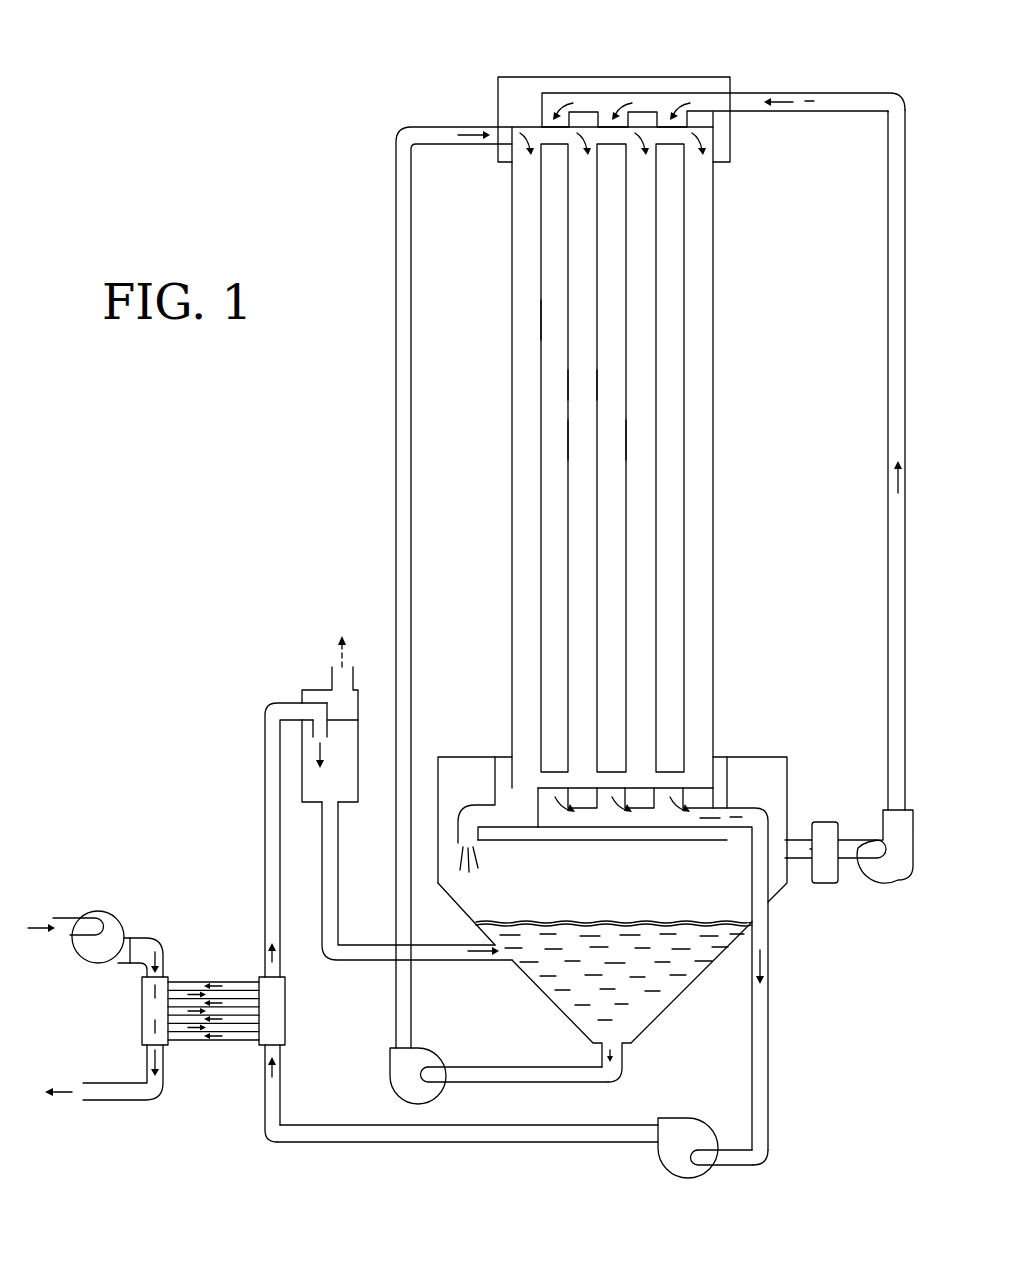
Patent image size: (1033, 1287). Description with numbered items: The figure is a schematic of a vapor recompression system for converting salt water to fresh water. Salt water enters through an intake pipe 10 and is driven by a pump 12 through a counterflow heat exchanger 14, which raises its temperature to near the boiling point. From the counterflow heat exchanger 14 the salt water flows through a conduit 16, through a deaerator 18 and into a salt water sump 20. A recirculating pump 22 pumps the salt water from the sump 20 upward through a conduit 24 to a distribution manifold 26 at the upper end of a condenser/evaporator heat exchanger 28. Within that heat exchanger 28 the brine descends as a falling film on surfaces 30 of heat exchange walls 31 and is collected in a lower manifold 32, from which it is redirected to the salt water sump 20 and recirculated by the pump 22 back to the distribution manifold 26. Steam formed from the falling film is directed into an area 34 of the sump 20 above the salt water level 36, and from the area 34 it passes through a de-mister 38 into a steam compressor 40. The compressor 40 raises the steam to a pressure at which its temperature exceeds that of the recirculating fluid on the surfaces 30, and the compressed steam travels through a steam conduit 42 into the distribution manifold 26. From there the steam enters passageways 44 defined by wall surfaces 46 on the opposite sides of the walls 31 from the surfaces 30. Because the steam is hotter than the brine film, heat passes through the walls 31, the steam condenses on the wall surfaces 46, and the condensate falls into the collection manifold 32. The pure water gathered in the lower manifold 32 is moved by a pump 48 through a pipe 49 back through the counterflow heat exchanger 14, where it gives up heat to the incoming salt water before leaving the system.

The intake pipe 10 is at (70, 930).
The pump 12 is at (117, 913).
The counterflow heat exchanger 14 is at (206, 972).
The conduit 16 is at (265, 823).
The deaerator 18 is at (350, 787).
The salt water sump 20 is at (558, 982).
The recirculating pump 22 is at (405, 1080).
The conduit 24 is at (403, 540).
The distribution manifold 26 is at (620, 72).
The condenser/evaporator heat exchanger 28 is at (741, 392).
The surfaces 30 is at (541, 229).
The walls 31 is at (567, 326).
The lower manifold 32 is at (642, 849).
The area 34 is at (572, 885).
The level of the salt water 36 is at (585, 920).
The de-mister 38 is at (827, 825).
The steam compressor 40 is at (885, 875).
The steam conduit 42 is at (888, 540).
The passageways 44 is at (607, 385).
The wall surfaces 46 is at (627, 448).
The pump 48 is at (677, 1168).
The pipe 49 is at (507, 1137).